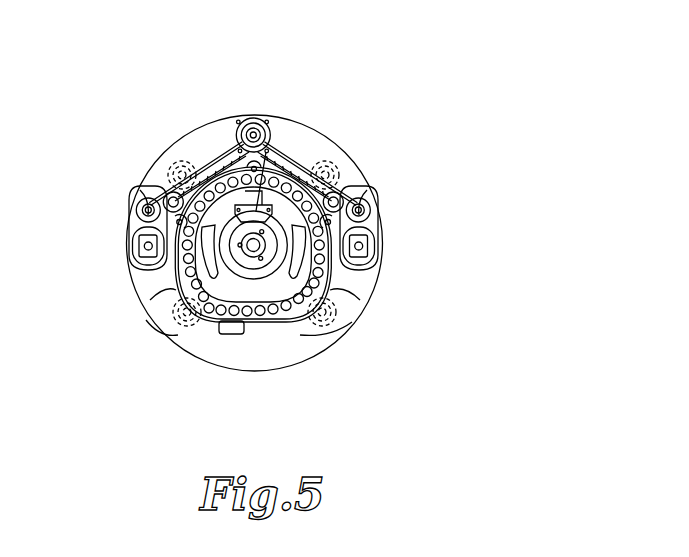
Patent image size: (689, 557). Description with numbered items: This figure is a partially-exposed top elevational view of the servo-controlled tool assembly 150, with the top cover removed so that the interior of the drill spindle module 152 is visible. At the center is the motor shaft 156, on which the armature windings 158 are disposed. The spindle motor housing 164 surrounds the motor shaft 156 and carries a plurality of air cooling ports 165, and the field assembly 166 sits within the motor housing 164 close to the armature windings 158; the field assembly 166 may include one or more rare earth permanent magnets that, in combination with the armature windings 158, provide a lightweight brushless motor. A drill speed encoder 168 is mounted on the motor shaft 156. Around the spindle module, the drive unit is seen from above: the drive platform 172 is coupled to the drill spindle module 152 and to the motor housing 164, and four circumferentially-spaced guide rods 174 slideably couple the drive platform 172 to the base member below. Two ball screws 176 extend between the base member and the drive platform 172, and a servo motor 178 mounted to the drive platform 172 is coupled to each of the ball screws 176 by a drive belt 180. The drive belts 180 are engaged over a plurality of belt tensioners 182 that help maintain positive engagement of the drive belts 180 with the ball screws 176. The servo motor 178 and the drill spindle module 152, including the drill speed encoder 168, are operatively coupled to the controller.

The servo-controlled tool assembly 150 is at (490, 63).
The drill spindle module 152 is at (350, 287).
The motor shaft 156 is at (258, 252).
The armature windings 158 is at (243, 258).
The spindle motor housing 164 is at (217, 275).
The air cooling ports 165 is at (212, 176).
The field assembly 166 is at (180, 295).
The drill speed encoder 168 is at (300, 172).
The drive platform 172 is at (255, 372).
The guide rods 174 is at (168, 160).
The ball screws 176 is at (132, 244).
The servo motor 178 is at (267, 121).
The drive belts 180 is at (205, 165).
The belt tensioners 182 is at (140, 198).